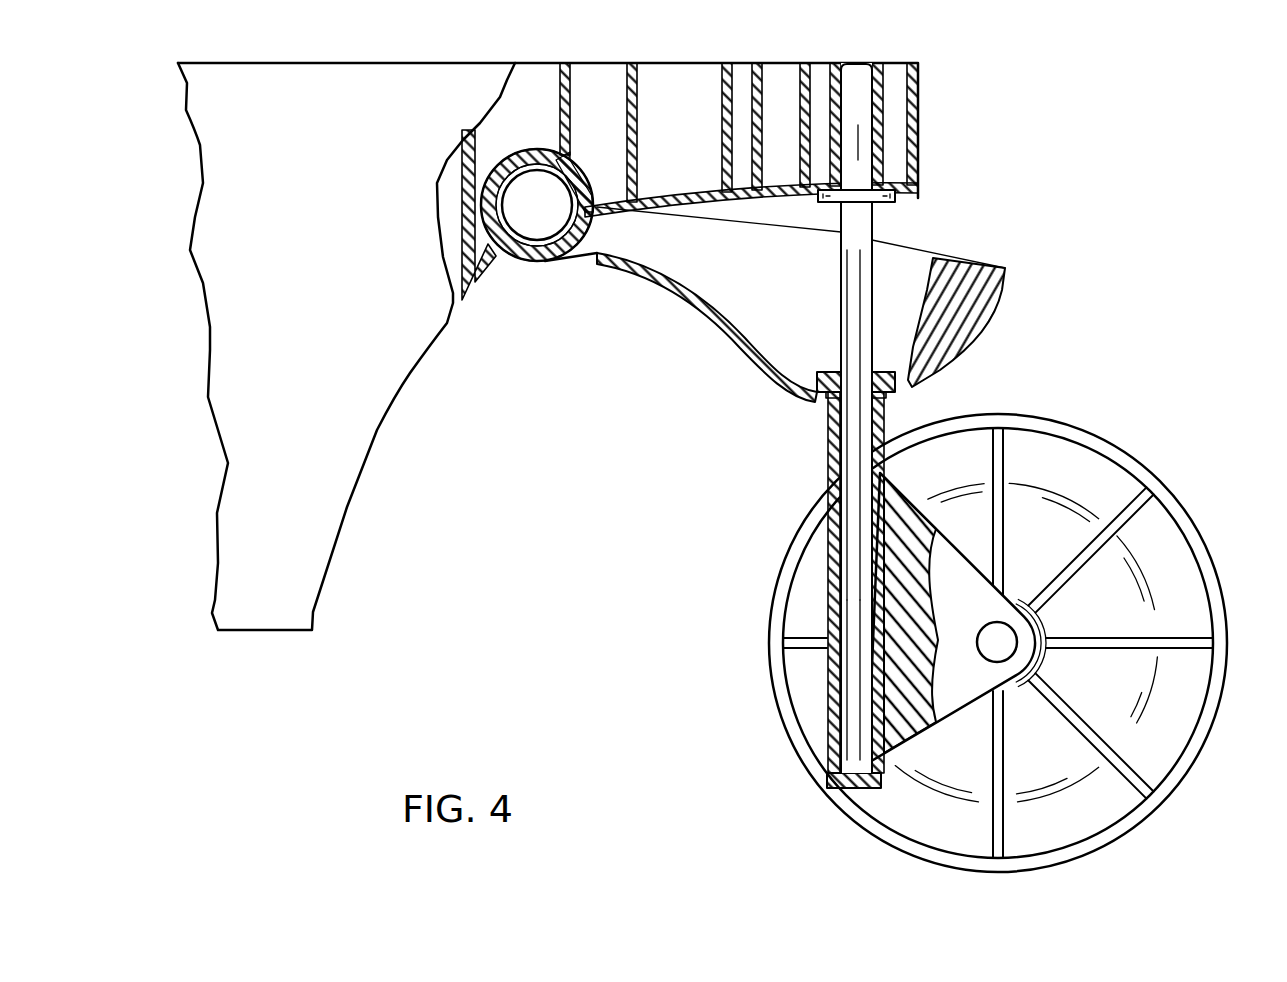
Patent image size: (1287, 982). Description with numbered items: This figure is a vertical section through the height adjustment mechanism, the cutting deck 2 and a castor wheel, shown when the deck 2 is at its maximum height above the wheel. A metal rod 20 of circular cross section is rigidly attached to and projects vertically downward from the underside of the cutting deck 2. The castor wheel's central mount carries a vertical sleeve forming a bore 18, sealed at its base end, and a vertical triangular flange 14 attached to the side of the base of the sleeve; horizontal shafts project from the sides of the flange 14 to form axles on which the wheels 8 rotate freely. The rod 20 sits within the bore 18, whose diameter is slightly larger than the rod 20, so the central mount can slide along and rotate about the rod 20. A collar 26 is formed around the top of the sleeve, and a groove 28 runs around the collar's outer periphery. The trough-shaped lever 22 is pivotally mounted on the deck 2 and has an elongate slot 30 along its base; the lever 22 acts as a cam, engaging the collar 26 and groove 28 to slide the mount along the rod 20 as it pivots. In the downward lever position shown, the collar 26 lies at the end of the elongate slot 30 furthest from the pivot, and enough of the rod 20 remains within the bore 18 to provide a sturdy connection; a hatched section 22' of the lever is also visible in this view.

The cutting deck 2 is at (350, 336).
The wheel 8 is at (1165, 748).
The vertical triangular flange 14 is at (930, 724).
The bore 18 is at (848, 722).
The metal rod 20 is at (855, 573).
The lever 22 is at (649, 275).
The frame arm section 22' is at (1016, 322).
The collar 26 is at (813, 433).
The groove 28 is at (823, 395).
The elongate slot 30 is at (815, 393).